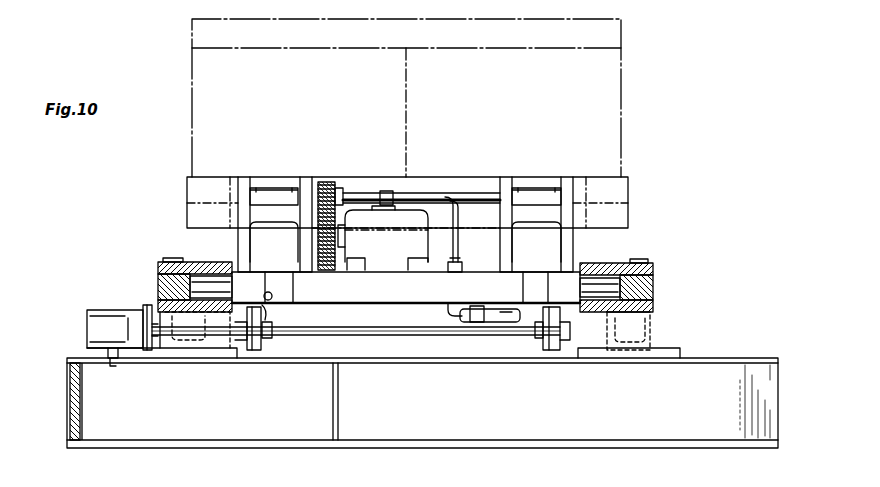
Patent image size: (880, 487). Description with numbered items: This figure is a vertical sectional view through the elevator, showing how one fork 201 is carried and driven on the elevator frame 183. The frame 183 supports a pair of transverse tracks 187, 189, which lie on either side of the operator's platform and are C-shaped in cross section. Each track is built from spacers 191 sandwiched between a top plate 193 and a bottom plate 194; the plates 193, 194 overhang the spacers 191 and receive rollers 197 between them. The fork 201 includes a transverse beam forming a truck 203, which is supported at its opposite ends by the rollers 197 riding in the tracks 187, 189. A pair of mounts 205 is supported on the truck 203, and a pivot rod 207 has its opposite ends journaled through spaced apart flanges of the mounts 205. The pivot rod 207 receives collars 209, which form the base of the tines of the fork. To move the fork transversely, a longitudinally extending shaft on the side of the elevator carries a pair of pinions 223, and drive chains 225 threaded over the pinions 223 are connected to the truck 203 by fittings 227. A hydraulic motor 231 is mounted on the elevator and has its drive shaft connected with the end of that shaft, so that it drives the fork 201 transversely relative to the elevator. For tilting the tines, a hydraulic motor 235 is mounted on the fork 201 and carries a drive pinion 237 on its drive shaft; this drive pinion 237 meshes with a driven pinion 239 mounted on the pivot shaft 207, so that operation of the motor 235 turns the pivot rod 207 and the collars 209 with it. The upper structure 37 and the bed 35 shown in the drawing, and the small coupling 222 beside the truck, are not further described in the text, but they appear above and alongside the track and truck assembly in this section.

The upper housing 37 is at (621, 85).
The machine bed 35 is at (628, 178).
The mounts 205 is at (242, 185).
The collars 209 is at (288, 186).
The driven pinions 239 is at (334, 186).
The pivot rod 207 is at (406, 191).
The hydraulic motor 235 is at (448, 200).
The drive pinions 237 is at (320, 270).
The transverse track 189 is at (622, 266).
The transverse track 187 is at (190, 258).
The spacers 191 is at (158, 284).
The top plate 193 is at (205, 263).
The rollers 197 is at (218, 280).
The bottom plate 194 is at (220, 312).
The hydraulic motor 231 is at (87, 322).
The trucks 203 is at (392, 336).
The drive chains 225 is at (316, 328).
The pinions 223 is at (262, 350).
The coupling 222 is at (278, 340).
The fittings 227 is at (272, 300).
The fork 201 is at (346, 365).
The frame 183 is at (172, 448).